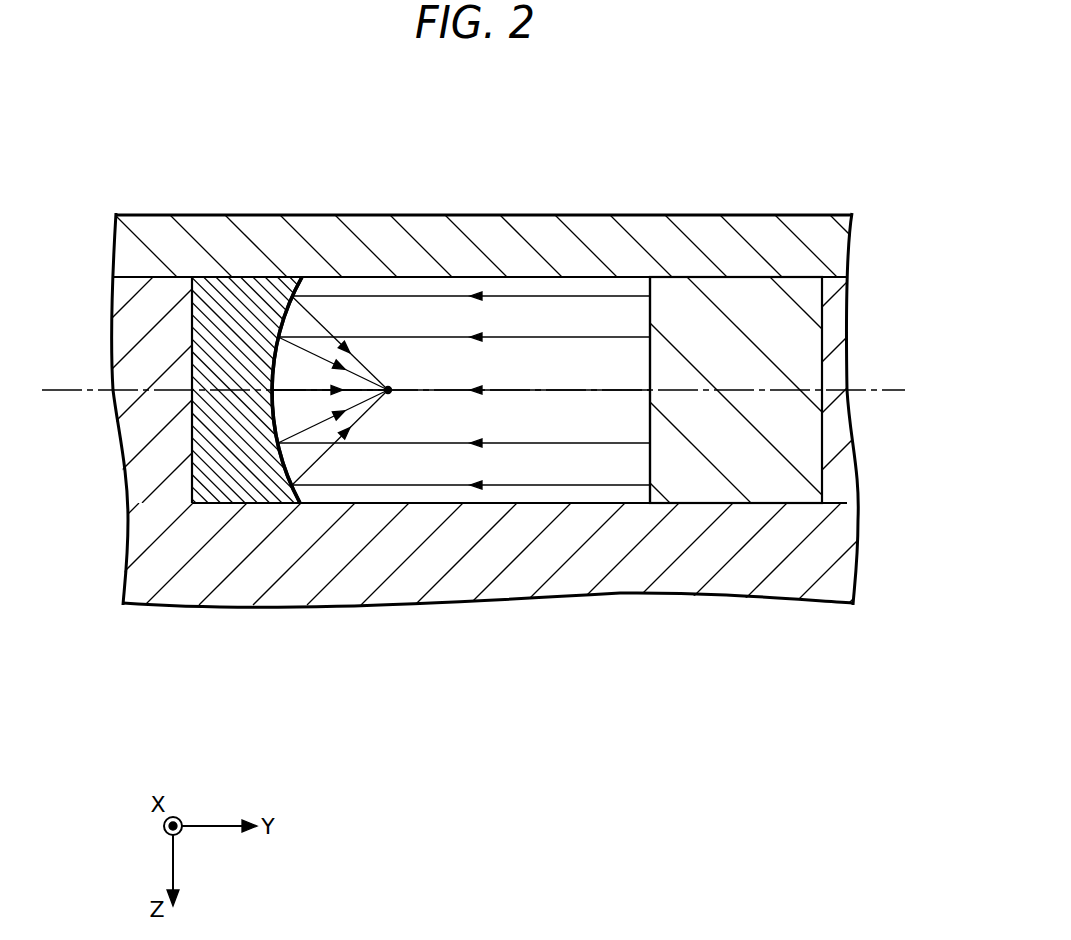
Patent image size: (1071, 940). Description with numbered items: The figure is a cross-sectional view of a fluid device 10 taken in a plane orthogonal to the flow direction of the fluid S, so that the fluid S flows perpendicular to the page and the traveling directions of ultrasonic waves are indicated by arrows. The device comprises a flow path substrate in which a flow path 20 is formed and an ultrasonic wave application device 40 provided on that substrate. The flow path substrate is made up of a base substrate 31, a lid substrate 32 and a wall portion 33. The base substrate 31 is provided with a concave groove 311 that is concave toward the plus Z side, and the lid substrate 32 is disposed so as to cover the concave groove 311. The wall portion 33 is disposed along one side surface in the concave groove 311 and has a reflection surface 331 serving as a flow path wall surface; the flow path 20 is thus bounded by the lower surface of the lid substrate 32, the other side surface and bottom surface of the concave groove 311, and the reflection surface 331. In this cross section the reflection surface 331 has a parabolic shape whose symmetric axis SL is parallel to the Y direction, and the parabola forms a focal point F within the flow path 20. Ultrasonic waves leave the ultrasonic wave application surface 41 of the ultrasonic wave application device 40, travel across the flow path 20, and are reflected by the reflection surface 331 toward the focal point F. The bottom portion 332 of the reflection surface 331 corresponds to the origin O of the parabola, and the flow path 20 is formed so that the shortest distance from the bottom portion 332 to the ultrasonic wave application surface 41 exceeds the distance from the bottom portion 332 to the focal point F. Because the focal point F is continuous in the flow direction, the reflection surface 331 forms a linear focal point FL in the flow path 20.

The fluid device 10 is at (755, 125).
The flow path 20 is at (566, 200).
The base substrate 31 is at (360, 568).
The concave groove 311 is at (193, 458).
The lid substrate 32 is at (432, 242).
The wall portion 33 is at (235, 285).
The reflection surface 331 is at (300, 497).
The bottom portion 332 is at (273, 385).
The origin O is at (194, 390).
The ultrasonic wave application device 40 is at (790, 335).
The ultrasonic wave application surface 41 is at (650, 303).
The fluid S is at (329, 290).
The focal point F is at (388, 390).
The linear focal point FL is at (343, 317).
The symmetric axis SL is at (880, 390).